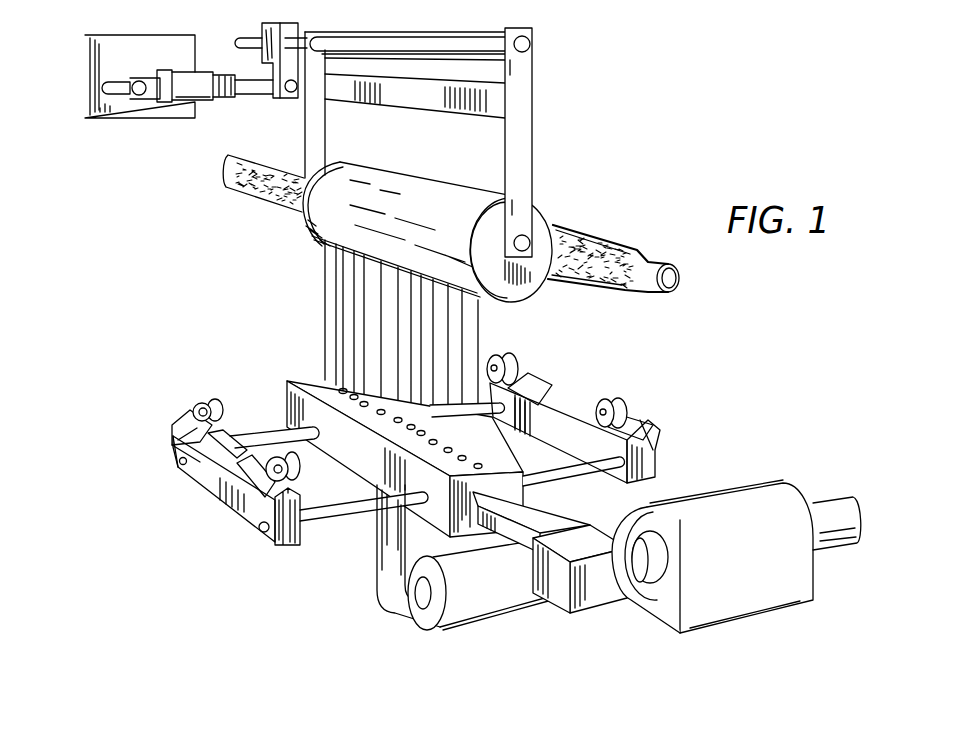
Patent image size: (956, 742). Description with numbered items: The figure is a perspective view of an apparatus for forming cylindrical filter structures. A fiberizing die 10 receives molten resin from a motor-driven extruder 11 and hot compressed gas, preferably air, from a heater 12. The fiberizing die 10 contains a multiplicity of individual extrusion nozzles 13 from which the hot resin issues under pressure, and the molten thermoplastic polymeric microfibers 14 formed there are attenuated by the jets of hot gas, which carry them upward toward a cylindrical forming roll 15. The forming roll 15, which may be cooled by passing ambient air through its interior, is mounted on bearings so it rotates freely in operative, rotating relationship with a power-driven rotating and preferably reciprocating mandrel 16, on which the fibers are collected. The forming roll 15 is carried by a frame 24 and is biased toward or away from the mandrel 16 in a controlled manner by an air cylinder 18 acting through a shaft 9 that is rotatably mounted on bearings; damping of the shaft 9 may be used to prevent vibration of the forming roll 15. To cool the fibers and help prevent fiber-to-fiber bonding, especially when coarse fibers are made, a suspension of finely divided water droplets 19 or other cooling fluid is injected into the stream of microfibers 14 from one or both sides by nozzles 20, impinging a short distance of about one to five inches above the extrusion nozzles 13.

The shaft 9 is at (246, 37).
The fiberizing die 10 is at (305, 380).
The motor-driven extruder 11 is at (730, 492).
The heater 12 is at (478, 616).
The extrusion nozzles 13 is at (390, 434).
The microfibers 14 is at (400, 312).
The forming roll 15 is at (303, 237).
The mandrel 16 is at (652, 262).
The air cylinder 18 is at (177, 107).
The water droplets 19 is at (237, 378).
The nozzles 20 is at (170, 443).
The frame 24 is at (532, 100).